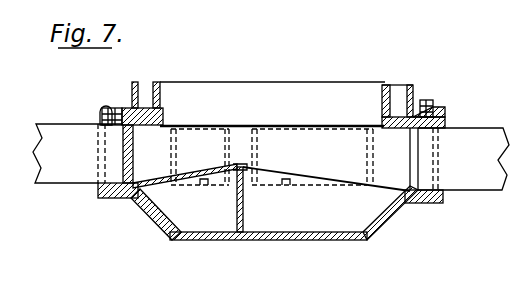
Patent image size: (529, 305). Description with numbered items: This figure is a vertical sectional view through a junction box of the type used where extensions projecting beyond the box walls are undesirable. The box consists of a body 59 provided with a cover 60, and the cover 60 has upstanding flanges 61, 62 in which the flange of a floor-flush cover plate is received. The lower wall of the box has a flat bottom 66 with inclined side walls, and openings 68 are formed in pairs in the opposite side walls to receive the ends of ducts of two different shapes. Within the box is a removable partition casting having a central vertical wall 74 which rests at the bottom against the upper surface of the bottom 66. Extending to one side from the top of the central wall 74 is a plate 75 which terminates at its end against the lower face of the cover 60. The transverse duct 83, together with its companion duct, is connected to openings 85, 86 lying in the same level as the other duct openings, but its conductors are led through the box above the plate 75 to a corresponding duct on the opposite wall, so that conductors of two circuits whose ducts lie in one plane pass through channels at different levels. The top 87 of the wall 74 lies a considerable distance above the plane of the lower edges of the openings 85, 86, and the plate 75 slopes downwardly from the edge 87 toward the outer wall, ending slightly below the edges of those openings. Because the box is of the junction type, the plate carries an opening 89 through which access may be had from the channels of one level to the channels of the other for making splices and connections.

The body 59 is at (138, 220).
The cover 60 is at (414, 107).
The upstanding flange 61 is at (388, 83).
The upstanding flange 62 is at (410, 84).
The flat bottom 66 is at (260, 241).
The openings 68 is at (415, 160).
The central vertical wall 74 is at (238, 207).
The plate 75 is at (183, 172).
The duct 83 is at (458, 137).
The opening 85 is at (210, 182).
The opening 86 is at (287, 180).
The top of wall 74 87 is at (238, 165).
The opening 89 is at (321, 171).